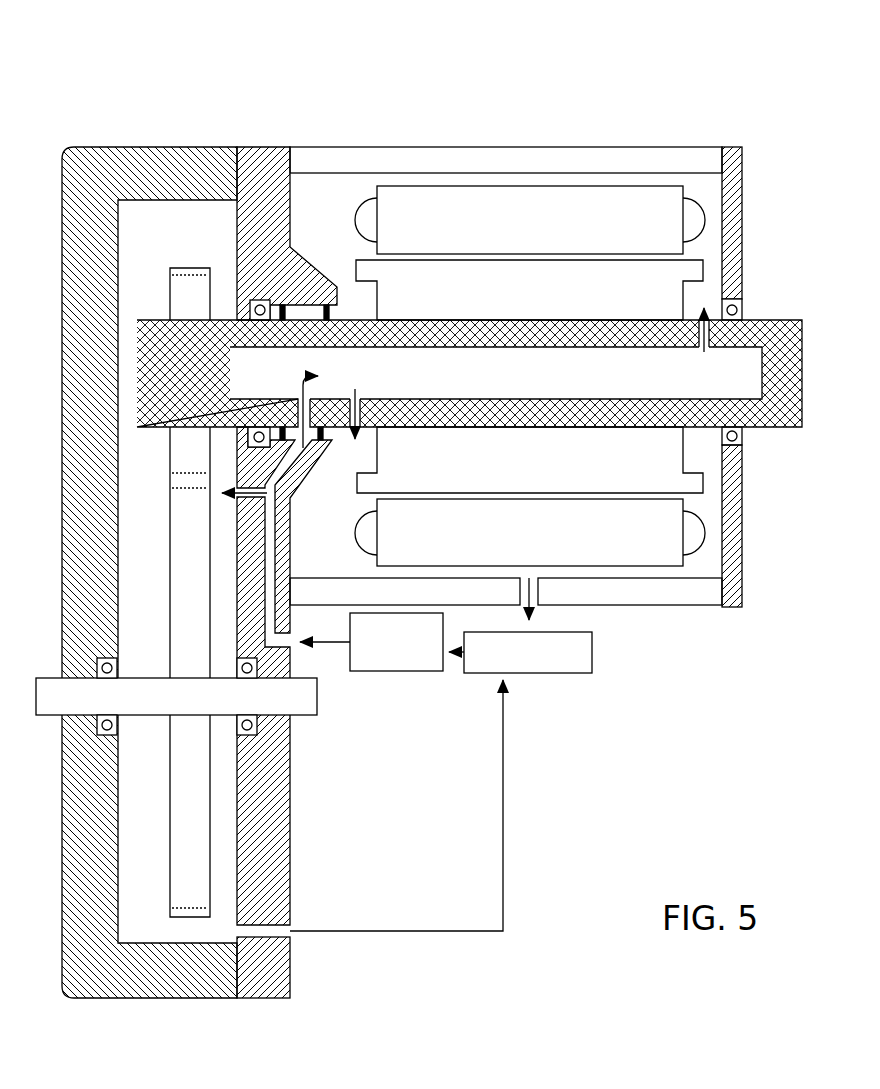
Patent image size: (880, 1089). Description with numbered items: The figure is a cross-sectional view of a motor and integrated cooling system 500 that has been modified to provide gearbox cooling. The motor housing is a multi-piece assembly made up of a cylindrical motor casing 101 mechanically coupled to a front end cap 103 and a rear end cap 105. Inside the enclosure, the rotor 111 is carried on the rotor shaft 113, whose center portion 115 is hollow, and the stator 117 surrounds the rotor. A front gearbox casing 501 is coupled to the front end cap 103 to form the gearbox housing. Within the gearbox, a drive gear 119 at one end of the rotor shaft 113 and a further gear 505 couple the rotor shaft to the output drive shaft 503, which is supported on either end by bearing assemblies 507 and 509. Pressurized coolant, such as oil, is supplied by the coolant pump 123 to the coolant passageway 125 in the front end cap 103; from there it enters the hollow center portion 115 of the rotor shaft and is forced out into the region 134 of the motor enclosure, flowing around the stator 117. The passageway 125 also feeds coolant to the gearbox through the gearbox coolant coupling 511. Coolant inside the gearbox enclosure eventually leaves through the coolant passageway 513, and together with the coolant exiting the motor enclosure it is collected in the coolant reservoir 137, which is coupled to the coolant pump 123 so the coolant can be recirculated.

The system 500 is at (246, 62).
The front gearbox casing 501 is at (163, 166).
The front end cap 103 is at (262, 160).
The rear end cap 105 is at (728, 188).
The cylindrical motor casing 101 is at (526, 171).
The stator 117 is at (526, 227).
The region of the motor enclosure 134 is at (346, 245).
The rotor 111 is at (526, 297).
The drive gear 119 is at (183, 293).
The center portion of rotor shaft 115 is at (526, 382).
The rotor shaft 113 is at (492, 389).
The gear 505 is at (171, 580).
The gearbox coolant coupling 511 is at (257, 505).
The coolant passageway 125 is at (311, 536).
The coolant pump 123 is at (380, 672).
The coolant reservoir 137 is at (513, 673).
The output drive shaft 503 is at (200, 710).
The bearing assembly 507 is at (112, 726).
The bearing assembly 509 is at (253, 726).
The coolant passageway 513 is at (280, 944).